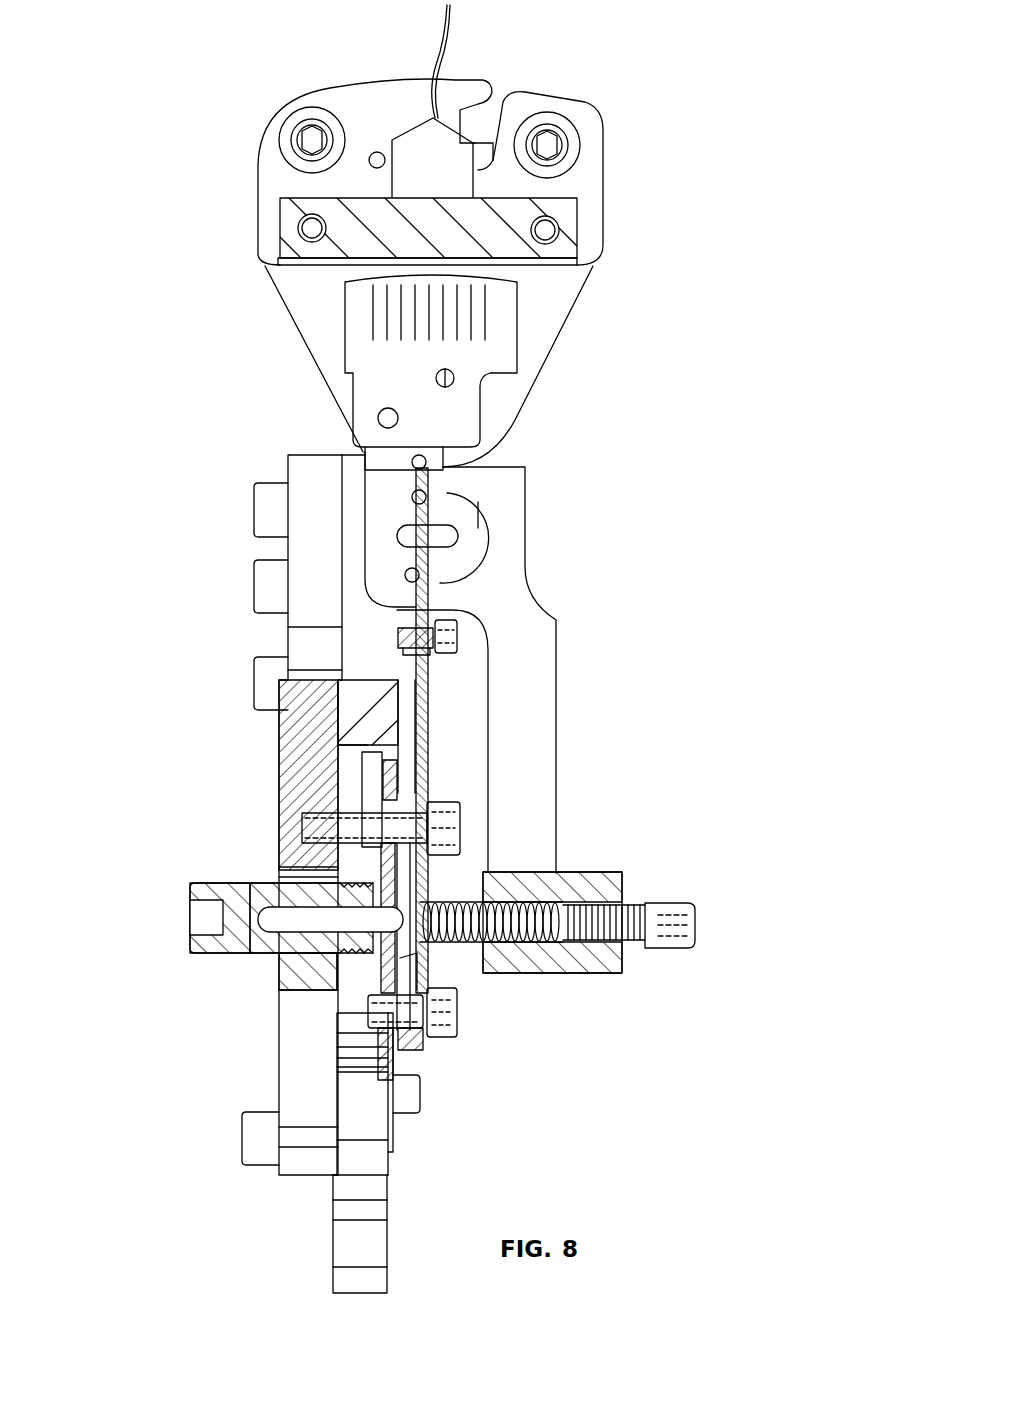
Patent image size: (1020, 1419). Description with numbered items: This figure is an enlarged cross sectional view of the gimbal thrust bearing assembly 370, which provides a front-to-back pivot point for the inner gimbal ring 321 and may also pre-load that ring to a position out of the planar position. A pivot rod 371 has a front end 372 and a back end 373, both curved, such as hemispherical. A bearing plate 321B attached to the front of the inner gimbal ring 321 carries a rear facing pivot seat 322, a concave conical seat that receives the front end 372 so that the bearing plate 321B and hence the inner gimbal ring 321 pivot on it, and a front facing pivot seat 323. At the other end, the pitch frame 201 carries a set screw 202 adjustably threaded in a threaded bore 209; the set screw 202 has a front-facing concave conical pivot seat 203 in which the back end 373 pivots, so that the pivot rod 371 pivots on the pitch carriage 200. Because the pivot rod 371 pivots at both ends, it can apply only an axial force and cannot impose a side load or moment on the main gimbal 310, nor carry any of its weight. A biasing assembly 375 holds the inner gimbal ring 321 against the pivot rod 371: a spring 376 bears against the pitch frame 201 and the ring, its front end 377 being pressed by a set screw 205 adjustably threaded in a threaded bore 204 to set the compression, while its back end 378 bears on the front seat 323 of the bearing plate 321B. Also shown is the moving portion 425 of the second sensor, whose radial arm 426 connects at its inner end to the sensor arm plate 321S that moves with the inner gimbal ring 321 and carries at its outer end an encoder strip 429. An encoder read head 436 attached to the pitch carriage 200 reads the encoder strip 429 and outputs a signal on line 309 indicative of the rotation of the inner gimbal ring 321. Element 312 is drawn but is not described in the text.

The pitch carriage 200 is at (279, 768).
The pitch frame 201 is at (555, 333).
The set screw 202 is at (195, 890).
The pivot seat 203 is at (250, 884).
The threaded bore 204 is at (622, 947).
The set screw 205 is at (693, 912).
The threaded bore 209 is at (278, 890).
The line 309 is at (454, 22).
The main gimbal 310 is at (393, 1138).
The bushing 312 is at (395, 1060).
The inner gimbal ring 321 is at (365, 975).
The bearing plate 321B is at (432, 805).
The sensor arm plate 321S is at (425, 1040).
The rear facing pivot seat 322 is at (417, 953).
The front facing pivot seat 323 is at (460, 893).
The gimbal thrust bearing assembly 370 is at (212, 1072).
The pivot rod 371 is at (313, 950).
The front end 372 is at (433, 963).
The back end 373 is at (273, 940).
The biasing assembly 375 is at (678, 828).
The spring 376 is at (560, 902).
The front end 377 is at (578, 872).
The back end 378 is at (532, 903).
The moving portion 425 is at (265, 395).
The radial arm 426 is at (430, 590).
The encoder strip 429 is at (345, 312).
The encoder read head 436 is at (577, 218).